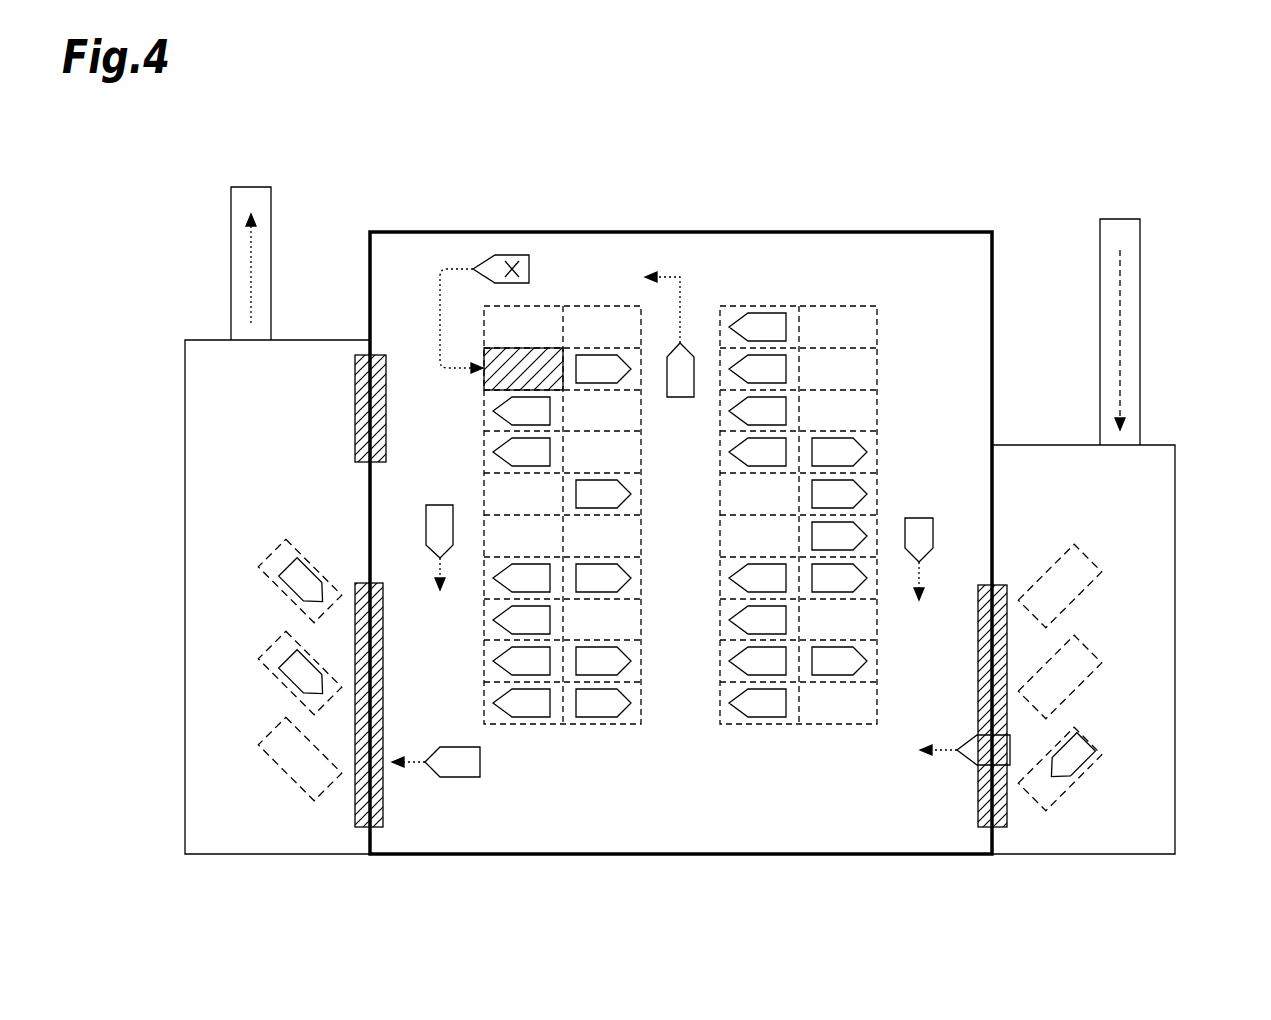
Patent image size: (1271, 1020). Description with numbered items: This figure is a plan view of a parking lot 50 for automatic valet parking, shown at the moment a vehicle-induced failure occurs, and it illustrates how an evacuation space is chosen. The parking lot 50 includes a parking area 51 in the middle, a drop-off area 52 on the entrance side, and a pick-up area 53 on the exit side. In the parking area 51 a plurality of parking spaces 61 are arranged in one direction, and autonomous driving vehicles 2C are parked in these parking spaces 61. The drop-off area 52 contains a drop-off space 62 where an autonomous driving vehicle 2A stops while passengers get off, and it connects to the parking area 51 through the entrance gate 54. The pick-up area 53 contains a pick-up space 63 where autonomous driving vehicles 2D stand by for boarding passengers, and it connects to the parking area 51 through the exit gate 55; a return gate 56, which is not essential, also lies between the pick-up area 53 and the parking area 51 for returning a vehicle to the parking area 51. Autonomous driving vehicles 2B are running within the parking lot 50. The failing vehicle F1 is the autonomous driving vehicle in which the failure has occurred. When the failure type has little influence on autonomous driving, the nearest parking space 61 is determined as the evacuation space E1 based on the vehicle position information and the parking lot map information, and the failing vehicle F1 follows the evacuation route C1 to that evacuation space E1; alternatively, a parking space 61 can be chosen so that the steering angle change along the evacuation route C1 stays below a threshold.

The parking lot 50 is at (1046, 166).
The parking area 51 is at (903, 231).
The drop-off area 52 is at (1177, 494).
The pick-up area 53 is at (183, 430).
The entrance gate 54 is at (980, 787).
The exit gate 55 is at (386, 777).
The return gate 56 is at (386, 373).
The parking space 61 is at (609, 306).
The drop-off space 62 is at (1100, 570).
The pick-up space 63 is at (286, 540).
The autonomous driving vehicle stopping in drop-off space 2A is at (1085, 772).
The autonomous driving vehicle running in parking lot 2B is at (691, 356).
The autonomous driving vehicle parking in parking space 2C is at (787, 322).
The autonomous driving vehicle stopping in pick-up space 2D is at (284, 576).
The evacuation route C1 is at (448, 267).
The evacuation space E1 is at (496, 378).
The failing vehicle F1 is at (506, 255).